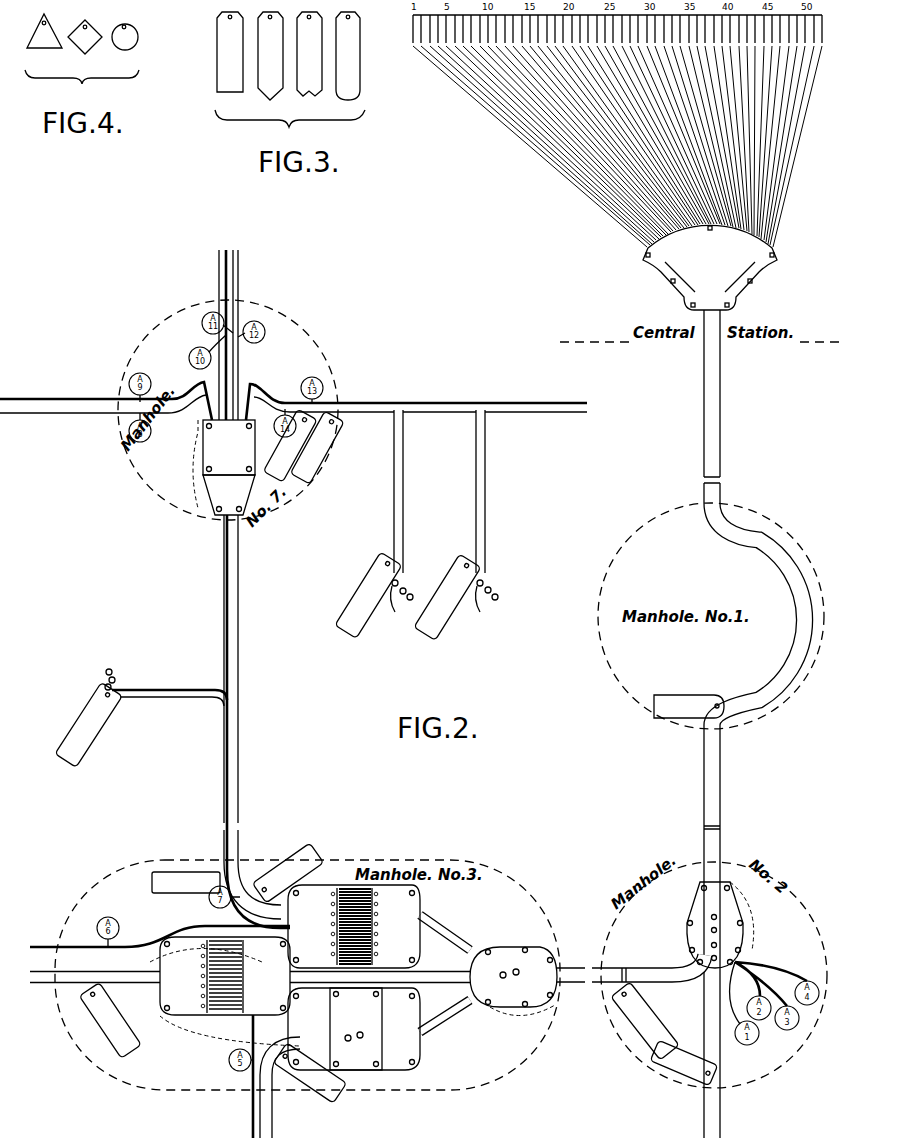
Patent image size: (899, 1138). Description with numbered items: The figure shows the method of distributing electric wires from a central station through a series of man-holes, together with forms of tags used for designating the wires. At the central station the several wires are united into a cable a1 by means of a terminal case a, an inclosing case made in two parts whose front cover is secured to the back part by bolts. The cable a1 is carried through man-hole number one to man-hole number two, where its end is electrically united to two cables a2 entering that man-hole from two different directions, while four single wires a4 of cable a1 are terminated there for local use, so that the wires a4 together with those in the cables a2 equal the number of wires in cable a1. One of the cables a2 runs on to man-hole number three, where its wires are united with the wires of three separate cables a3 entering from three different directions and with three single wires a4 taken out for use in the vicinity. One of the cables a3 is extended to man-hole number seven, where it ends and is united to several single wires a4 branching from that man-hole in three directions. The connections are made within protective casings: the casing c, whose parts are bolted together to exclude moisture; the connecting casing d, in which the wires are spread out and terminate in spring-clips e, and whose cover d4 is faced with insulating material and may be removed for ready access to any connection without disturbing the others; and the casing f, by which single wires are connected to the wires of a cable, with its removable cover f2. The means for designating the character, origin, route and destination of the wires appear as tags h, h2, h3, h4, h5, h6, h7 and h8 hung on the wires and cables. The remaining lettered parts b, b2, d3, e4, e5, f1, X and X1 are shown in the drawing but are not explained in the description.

The terminal case a is at (766, 276).
The cable a1 is at (722, 432).
The cables a2 is at (660, 972).
The cables a3 is at (281, 1118).
The single wires a4 is at (762, 965).
The branch pipe b is at (390, 415).
The cable coil b2 is at (306, 627).
The casing c is at (745, 912).
The connecting-casing d is at (408, 906).
The terminal box d3 is at (283, 982).
The cover d4 is at (356, 1029).
The spring-clips e is at (300, 950).
The terminals e4 is at (203, 962).
The binding posts e5 is at (431, 1013).
The casing f is at (192, 458).
The box f1 is at (229, 447).
The cover f2 is at (229, 495).
The tag h is at (690, 698).
The tag h2 is at (628, 1030).
The tag h3 is at (340, 1094).
The tag h4 is at (130, 1040).
The tag h5 is at (150, 888).
The tag h6 is at (310, 858).
The tag h7 is at (300, 482).
The tag h8 is at (348, 640).
The cross connection X is at (175, 940).
The cross connection X1 is at (222, 1034).